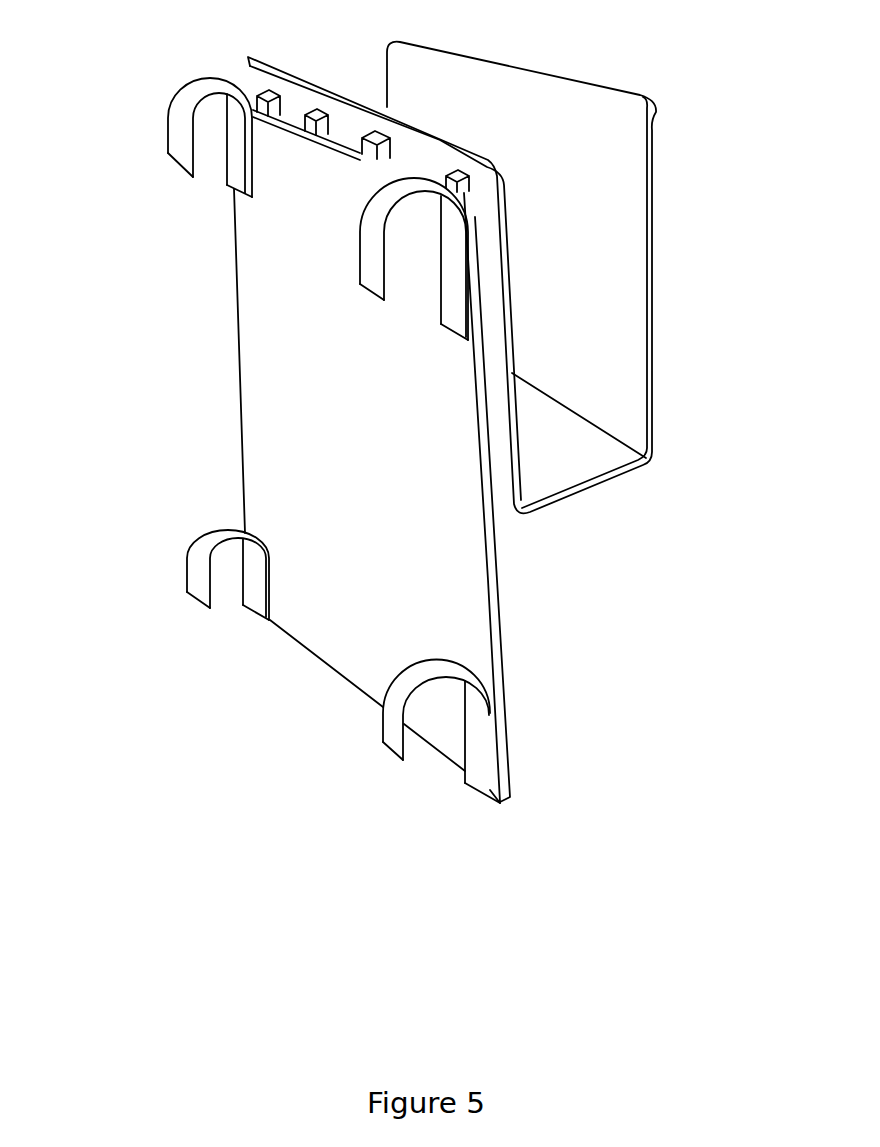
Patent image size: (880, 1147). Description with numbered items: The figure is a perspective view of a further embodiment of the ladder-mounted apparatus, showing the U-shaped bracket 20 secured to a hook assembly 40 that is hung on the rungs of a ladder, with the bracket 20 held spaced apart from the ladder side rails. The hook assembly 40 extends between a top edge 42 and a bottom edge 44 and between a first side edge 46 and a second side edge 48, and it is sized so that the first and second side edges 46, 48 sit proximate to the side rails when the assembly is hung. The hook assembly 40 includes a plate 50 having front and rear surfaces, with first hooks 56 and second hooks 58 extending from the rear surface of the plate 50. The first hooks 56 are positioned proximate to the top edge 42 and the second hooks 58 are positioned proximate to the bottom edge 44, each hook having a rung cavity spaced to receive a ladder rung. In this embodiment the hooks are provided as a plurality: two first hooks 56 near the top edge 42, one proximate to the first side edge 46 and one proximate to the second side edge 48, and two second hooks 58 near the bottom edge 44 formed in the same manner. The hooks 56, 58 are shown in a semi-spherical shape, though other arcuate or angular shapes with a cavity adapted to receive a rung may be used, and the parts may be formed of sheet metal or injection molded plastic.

The U-shaped bracket 20 is at (653, 276).
The hook assembly 40 is at (238, 363).
The top edge 42 is at (182, 88).
The bottom edge 44 is at (445, 760).
The first side edge 46 is at (245, 428).
The second side edge 48 is at (498, 605).
The plate 50 is at (273, 485).
The first hook 56 is at (178, 143).
The second hook 58 is at (197, 575).